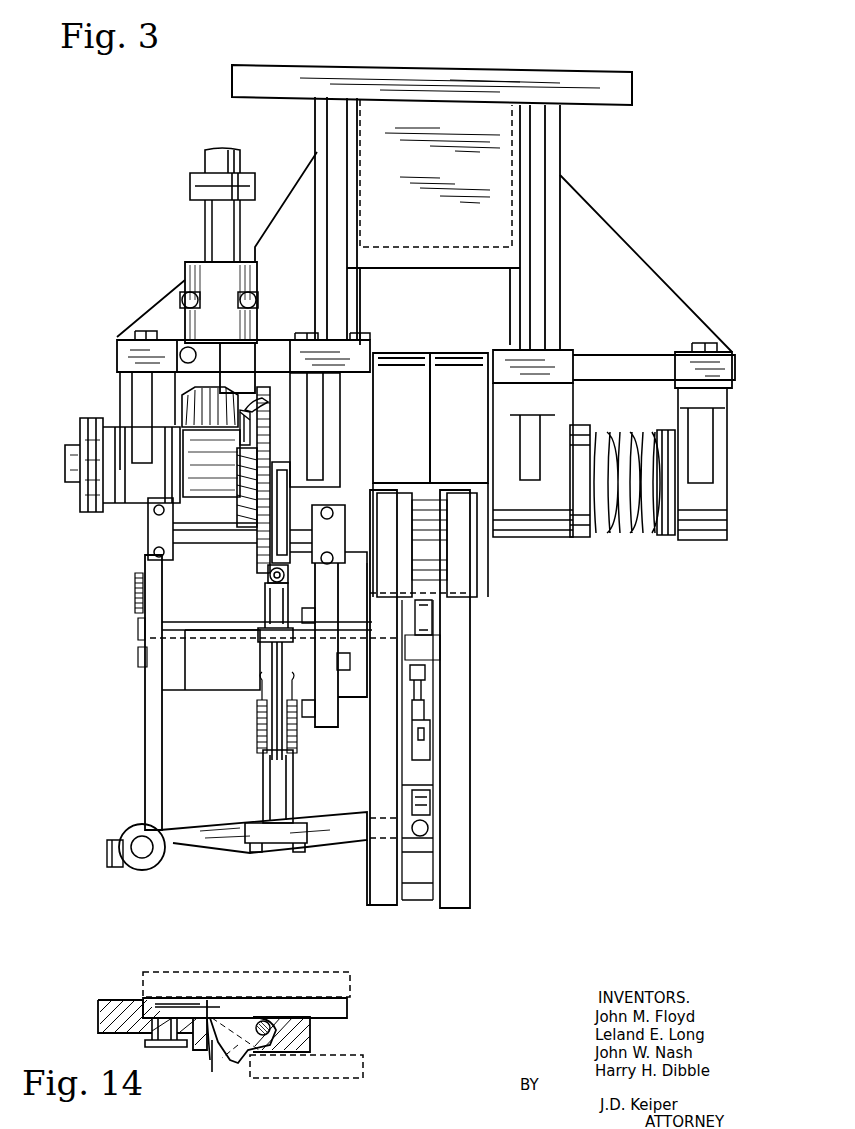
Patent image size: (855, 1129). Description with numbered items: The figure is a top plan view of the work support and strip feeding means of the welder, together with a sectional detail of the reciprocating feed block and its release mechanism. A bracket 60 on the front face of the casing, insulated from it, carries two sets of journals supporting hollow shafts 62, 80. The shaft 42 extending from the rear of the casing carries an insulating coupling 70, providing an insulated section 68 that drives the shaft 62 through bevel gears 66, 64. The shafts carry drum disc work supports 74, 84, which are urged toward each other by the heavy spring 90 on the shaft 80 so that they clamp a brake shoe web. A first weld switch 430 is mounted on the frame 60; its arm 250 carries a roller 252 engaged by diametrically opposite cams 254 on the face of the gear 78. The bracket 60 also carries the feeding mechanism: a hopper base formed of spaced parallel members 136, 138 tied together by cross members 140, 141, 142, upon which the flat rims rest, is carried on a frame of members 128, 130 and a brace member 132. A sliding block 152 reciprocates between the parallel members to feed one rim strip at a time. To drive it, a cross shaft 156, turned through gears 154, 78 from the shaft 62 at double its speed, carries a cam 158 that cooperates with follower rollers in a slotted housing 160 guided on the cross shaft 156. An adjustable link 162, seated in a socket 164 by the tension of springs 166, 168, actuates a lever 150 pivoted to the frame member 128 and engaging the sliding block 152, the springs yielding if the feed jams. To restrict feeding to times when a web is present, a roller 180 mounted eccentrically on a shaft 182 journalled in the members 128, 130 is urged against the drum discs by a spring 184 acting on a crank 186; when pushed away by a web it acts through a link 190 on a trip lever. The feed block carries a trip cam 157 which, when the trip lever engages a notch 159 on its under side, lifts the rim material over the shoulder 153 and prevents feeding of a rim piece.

In FIG. 3, the bracket 60 is at (632, 90).
In FIG. 3, the shaft 42 is at (205, 160).
In FIG. 3, the insulating coupling 70 is at (195, 187).
In FIG. 3, the insulated section 68 is at (210, 222).
In FIG. 3, the first weld switch 430 is at (255, 342).
In FIG. 3, the gear 78 is at (280, 358).
In FIG. 3, the drum disc work support 74 is at (405, 375).
In FIG. 3, the drum disc work support 84 is at (457, 375).
In FIG. 3, the bevel gear 66 is at (185, 415).
In FIG. 3, the arm 250 is at (250, 410).
In FIG. 3, the roller 252 is at (255, 425).
In FIG. 3, the bevel gear 64 is at (233, 460).
In FIG. 3, the hollow shaft 62 is at (148, 522).
In FIG. 3, the cam 254 is at (238, 505).
In FIG. 3, the housing 160 is at (287, 470).
In FIG. 3, the cam 158 is at (290, 497).
In FIG. 3, the cross shaft 156 is at (226, 546).
In FIG. 3, the gear 154 is at (257, 562).
In FIG. 3, the cross member 142 is at (435, 553).
In FIG. 3, the roller 180 is at (433, 600).
In FIG. 3, the cross member 141 is at (433, 622).
In FIG. 3, the link 190 is at (420, 697).
In FIG. 3, the heavy spring 90 is at (620, 535).
In FIG. 3, the hollow shaft 80 is at (633, 535).
In FIG. 3, the spring 184 is at (135, 602).
In FIG. 3, the crank 186 is at (138, 632).
In FIG. 3, the shaft 182 is at (237, 630).
In FIG. 3, the frame member 128 is at (152, 715).
In FIG. 3, the brace member 132 is at (213, 677).
In FIG. 3, the spring 166 is at (257, 735).
In FIG. 3, the spring 168 is at (298, 737).
In FIG. 3, the adjustable link 162 is at (258, 752).
In FIG. 3, the socket 164 is at (263, 792).
In FIG. 3, the frame member 130 is at (335, 727).
In FIG. 3, the lever 150 is at (233, 853).
In FIG. 14, the lever 150 is at (163, 1047).
In FIG. 3, the parallel member 136 is at (380, 860).
In FIG. 3, the parallel member 138 is at (457, 750).
In FIG. 3, the sliding block 152 is at (432, 807).
In FIG. 14, the sliding block 152 is at (207, 1052).
In FIG. 3, the cross member 140 is at (420, 892).
In FIG. 14, the shoulder 153 is at (142, 1000).
In FIG. 14, the trip cam 157 is at (242, 1028).
In FIG. 14, the notch 159 is at (247, 1065).